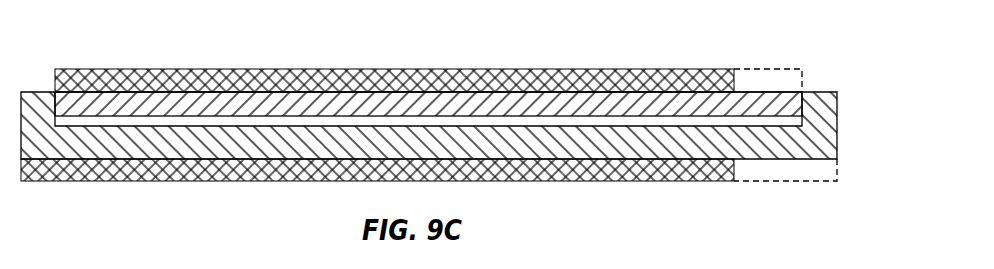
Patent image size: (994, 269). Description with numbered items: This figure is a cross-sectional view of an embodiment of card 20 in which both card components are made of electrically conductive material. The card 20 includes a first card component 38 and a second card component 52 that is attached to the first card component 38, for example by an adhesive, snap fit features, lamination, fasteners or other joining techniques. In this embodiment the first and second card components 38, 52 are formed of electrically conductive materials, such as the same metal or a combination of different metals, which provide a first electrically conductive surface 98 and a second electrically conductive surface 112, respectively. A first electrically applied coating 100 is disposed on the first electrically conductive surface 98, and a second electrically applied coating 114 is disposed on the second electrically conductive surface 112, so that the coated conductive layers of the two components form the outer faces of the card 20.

The card 20 is at (429, 120).
The first card component 38 is at (428, 74).
The second card component 52 is at (272, 142).
The first electrically conductive surface 98 is at (783, 91).
The first electrically applied coating 100 is at (675, 80).
The second electrically conductive surface 112 is at (806, 166).
The second electrically applied coating 114 is at (669, 170).